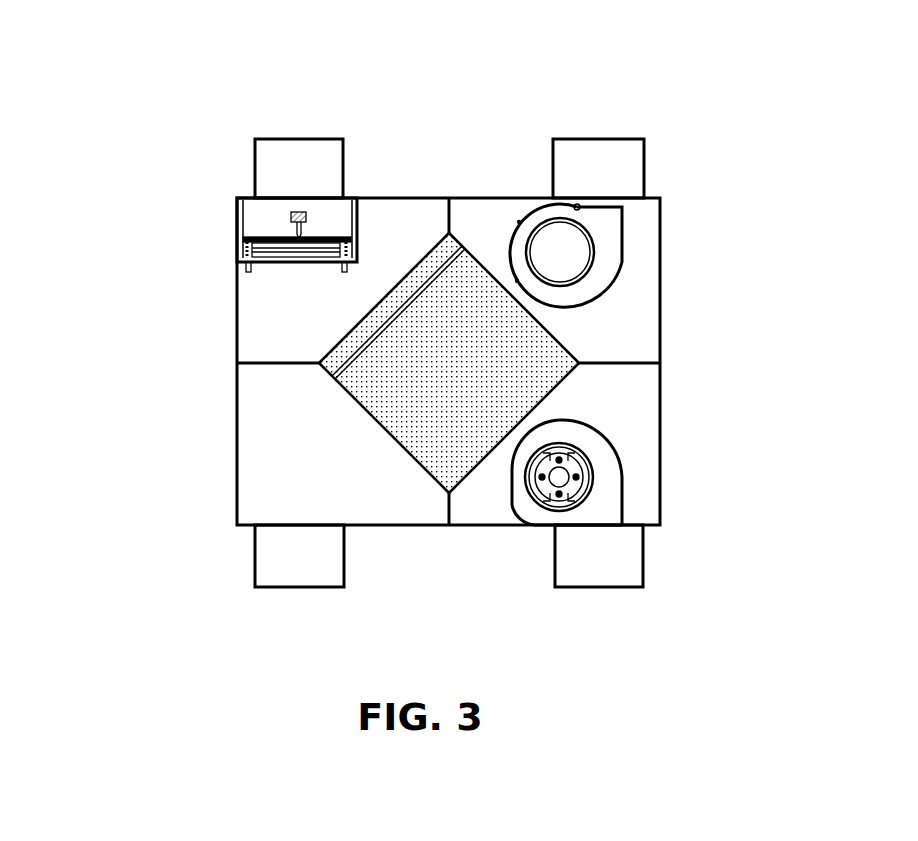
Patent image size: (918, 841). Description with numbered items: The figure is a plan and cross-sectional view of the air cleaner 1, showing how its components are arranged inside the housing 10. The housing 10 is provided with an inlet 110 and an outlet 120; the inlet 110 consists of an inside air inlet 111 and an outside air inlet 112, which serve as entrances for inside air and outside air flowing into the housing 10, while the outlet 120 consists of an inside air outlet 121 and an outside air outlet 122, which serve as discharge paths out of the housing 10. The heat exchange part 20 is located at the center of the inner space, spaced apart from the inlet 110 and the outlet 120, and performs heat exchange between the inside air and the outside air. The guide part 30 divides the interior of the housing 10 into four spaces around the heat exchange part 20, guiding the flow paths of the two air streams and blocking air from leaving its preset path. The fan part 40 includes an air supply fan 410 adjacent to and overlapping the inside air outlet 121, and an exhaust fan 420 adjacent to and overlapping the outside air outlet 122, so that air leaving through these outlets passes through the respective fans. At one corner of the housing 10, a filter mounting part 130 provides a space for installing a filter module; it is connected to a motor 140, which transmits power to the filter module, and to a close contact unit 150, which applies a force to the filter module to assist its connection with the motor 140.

The air cleaner 1 is at (239, 31).
The housing 10 is at (418, 198).
The heat exchange part 20 is at (480, 460).
The guide part 30 is at (452, 213).
The fan part 40 is at (624, 425).
The inlet 110 is at (193, 363).
The inside air inlet 111 is at (267, 555).
The outside air inlet 112 is at (265, 170).
The outlet 120 is at (703, 363).
The inside air outlet 121 is at (632, 170).
The outside air outlet 122 is at (632, 555).
The filter mounting part 130 is at (352, 218).
The motor 140 is at (299, 210).
The close contact unit 150 is at (280, 247).
The air supply fan 410 is at (607, 276).
The exhaust fan 420 is at (602, 448).